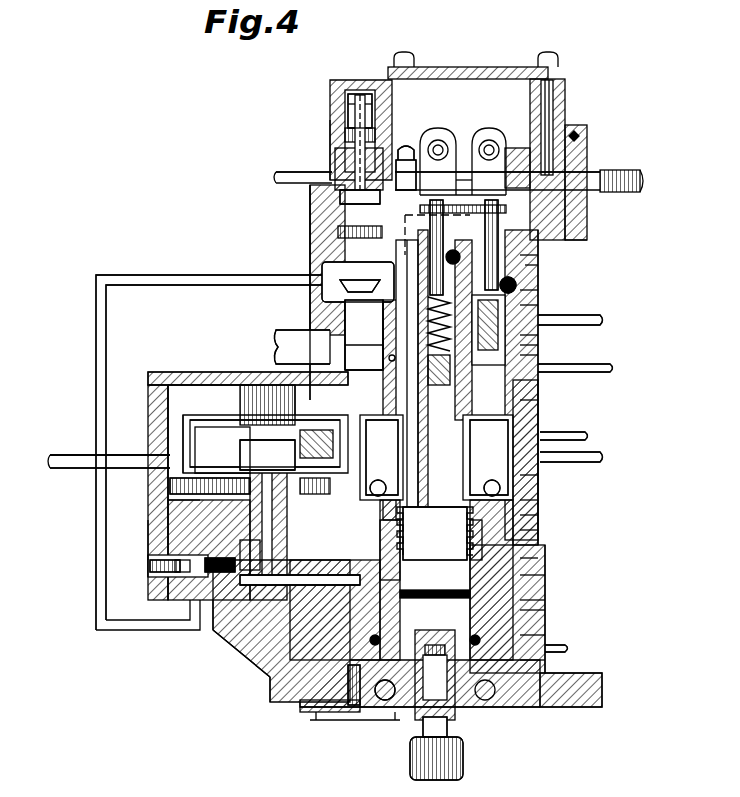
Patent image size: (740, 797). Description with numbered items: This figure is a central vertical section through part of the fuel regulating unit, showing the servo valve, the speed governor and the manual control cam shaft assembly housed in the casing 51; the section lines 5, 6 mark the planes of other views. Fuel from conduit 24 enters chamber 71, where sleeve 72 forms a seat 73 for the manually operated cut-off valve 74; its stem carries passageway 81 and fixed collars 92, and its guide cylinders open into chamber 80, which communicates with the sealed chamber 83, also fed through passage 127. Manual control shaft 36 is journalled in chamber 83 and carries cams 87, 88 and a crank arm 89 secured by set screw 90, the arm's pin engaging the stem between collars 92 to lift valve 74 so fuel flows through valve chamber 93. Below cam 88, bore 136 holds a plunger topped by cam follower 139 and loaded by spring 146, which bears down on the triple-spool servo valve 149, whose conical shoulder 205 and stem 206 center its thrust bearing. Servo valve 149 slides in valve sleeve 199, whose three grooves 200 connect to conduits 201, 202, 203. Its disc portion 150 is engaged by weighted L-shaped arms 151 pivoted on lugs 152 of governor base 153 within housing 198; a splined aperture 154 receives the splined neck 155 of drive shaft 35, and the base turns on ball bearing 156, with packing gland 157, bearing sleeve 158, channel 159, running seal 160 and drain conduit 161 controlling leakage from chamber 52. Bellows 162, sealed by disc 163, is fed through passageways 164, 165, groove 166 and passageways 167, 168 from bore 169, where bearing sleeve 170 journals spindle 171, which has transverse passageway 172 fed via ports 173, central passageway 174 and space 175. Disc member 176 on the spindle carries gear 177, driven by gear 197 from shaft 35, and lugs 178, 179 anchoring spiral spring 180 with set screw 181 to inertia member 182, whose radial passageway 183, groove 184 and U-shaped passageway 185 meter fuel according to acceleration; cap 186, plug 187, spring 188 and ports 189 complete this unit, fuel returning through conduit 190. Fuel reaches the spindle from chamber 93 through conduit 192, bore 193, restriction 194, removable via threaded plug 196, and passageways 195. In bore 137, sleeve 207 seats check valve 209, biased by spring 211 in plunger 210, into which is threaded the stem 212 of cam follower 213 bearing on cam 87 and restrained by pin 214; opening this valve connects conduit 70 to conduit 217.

The section line 5 is at (422, 145).
The section line 6 is at (476, 126).
The conduit 24 is at (306, 356).
The governor drive shaft 35 is at (463, 760).
The manual control shaft 36 is at (580, 182).
The casing 51 is at (318, 232).
The chamber 52 is at (165, 375).
The conduit 70 is at (600, 368).
The chamber 71 is at (388, 348).
The sleeve 72 is at (392, 373).
The seat 73 is at (358, 335).
The manually operated cut-off valve 74 is at (355, 290).
The chamber 80 is at (340, 160).
The passageway 81 is at (362, 110).
The chamber 83 is at (480, 104).
The cam 87 is at (512, 170).
The cam 88 is at (468, 164).
The crank arm 89 is at (410, 148).
The set screw 90 is at (400, 178).
The fixed collars 92 is at (358, 190).
The valve chamber 93 is at (345, 283).
The passage 127 is at (300, 182).
The cylindrical bore 136 is at (542, 380).
The cylindrical bore 137 is at (530, 264).
The cam follower 139 is at (436, 218).
The spring 146 is at (395, 328).
The triple-spool servo valve 149 is at (538, 397).
The annular disc portion 150 is at (538, 487).
The L-shaped arm 151 is at (538, 463).
The lugs 152 is at (538, 500).
The base 153 is at (538, 515).
The splined aperture 154 is at (520, 658).
The splined neck 155 is at (460, 722).
The ball bearing 156 is at (385, 700).
The packing gland 157 is at (345, 695).
The bearing sleeve 158 is at (540, 558).
The channel 159 is at (515, 600).
The running seal 160 is at (520, 636).
The drain conduit 161 is at (565, 648).
The pressure responsive bellows 162 is at (445, 552).
The disc 163 is at (435, 519).
The central passageway 164 is at (530, 612).
The radial passageway 165 is at (375, 608).
The circumferential groove 166 is at (520, 575).
The passageway 167 is at (378, 560).
The passageway 168 is at (325, 600).
The bore 169 is at (245, 630).
The bearing sleeve 170 is at (215, 610).
The rotating spindle 171 is at (275, 650).
The transverse passageway 172 is at (300, 568).
The registering ports 173 is at (245, 560).
The central passageway 174 is at (305, 488).
The space 175 is at (248, 425).
The annular disc member 176 is at (150, 548).
The gear 177 is at (150, 515).
The lug 178 is at (180, 500).
The lug 179 is at (175, 478).
The spiral spring 180 is at (200, 520).
The set screw 181 is at (115, 482).
The cylindrical inertia member 182 is at (200, 440).
The radial passageway 183 is at (190, 450).
The groove 184 is at (235, 462).
The U-shaped passageway 185 is at (300, 380).
The hollow cap 186 is at (190, 425).
The adjustable plug 187 is at (245, 400).
The spring 188 is at (235, 380).
The ports 189 is at (172, 415).
The conduit 190 is at (70, 470).
The conduit 192 is at (132, 625).
The bore 193 is at (165, 580).
The restriction 194 is at (185, 578).
The passageways 195 is at (218, 585).
The threaded plug 196 is at (148, 567).
The gear 197 is at (550, 534).
The hollow cylindrical housing 198 is at (538, 475).
The valve sleeve 199 is at (403, 478).
The circumferential grooves 200 is at (403, 440).
The conduit 201 is at (390, 360).
The conduit 202 is at (550, 436).
The conduit 203 is at (580, 456).
The conical shoulder 205 is at (538, 355).
The stem 206 is at (538, 335).
The sleeve 207 is at (538, 350).
The sleeve check valve 209 is at (560, 312).
The plunger 210 is at (517, 283).
The spring 211 is at (540, 292).
The threaded stem 212 is at (530, 255).
The cam follower 213 is at (491, 218).
The pin 214 is at (587, 232).
The conduit 217 is at (598, 321).